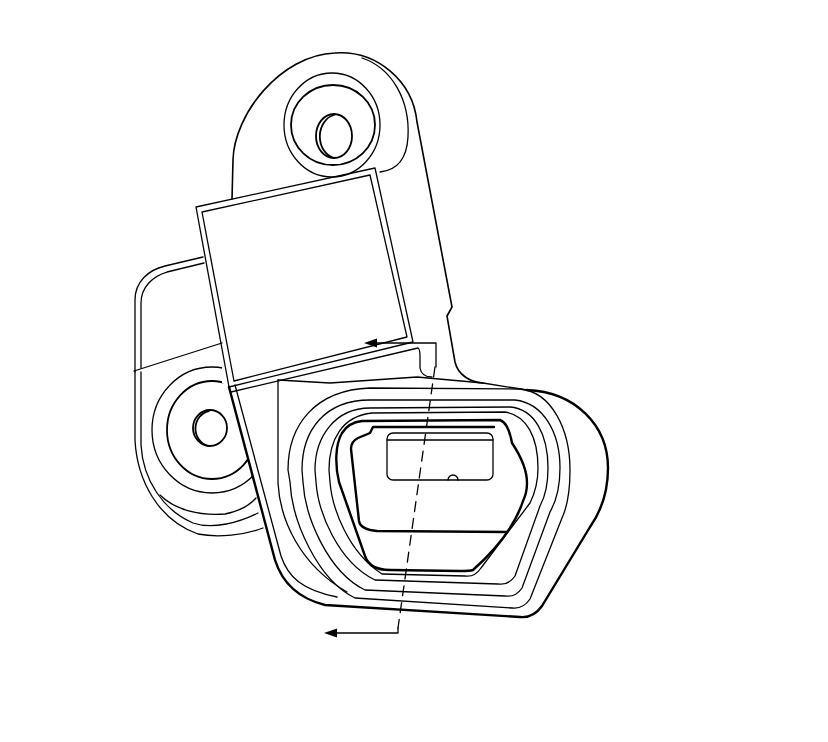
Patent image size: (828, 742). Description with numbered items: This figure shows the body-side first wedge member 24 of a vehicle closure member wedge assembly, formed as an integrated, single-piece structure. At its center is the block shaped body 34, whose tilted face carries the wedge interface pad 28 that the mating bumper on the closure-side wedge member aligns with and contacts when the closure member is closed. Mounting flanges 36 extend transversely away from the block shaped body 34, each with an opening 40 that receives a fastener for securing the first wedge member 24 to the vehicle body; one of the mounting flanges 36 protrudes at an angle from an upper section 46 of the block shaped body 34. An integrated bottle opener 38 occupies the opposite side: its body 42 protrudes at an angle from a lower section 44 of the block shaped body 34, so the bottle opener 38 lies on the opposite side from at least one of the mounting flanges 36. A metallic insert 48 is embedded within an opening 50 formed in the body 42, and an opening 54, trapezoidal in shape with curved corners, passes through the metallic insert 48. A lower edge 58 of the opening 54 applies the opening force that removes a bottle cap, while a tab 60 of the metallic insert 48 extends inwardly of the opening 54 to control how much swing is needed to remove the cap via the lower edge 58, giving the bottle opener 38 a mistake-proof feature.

The first wedge member 24 is at (427, 77).
The wedge interface pad 28 is at (360, 232).
The block shaped body 34 is at (430, 258).
The mounting flange 36 is at (257, 137).
The opening 40 is at (342, 127).
The lower section 44 is at (222, 432).
The upper section 46 is at (410, 157).
The bottle opener 38 is at (615, 430).
The body 42 is at (543, 510).
The metallic insert 48 is at (443, 557).
The opening 50 is at (533, 440).
The opening 54 is at (457, 455).
The lower edge 58 is at (450, 485).
The tab 60 is at (458, 437).